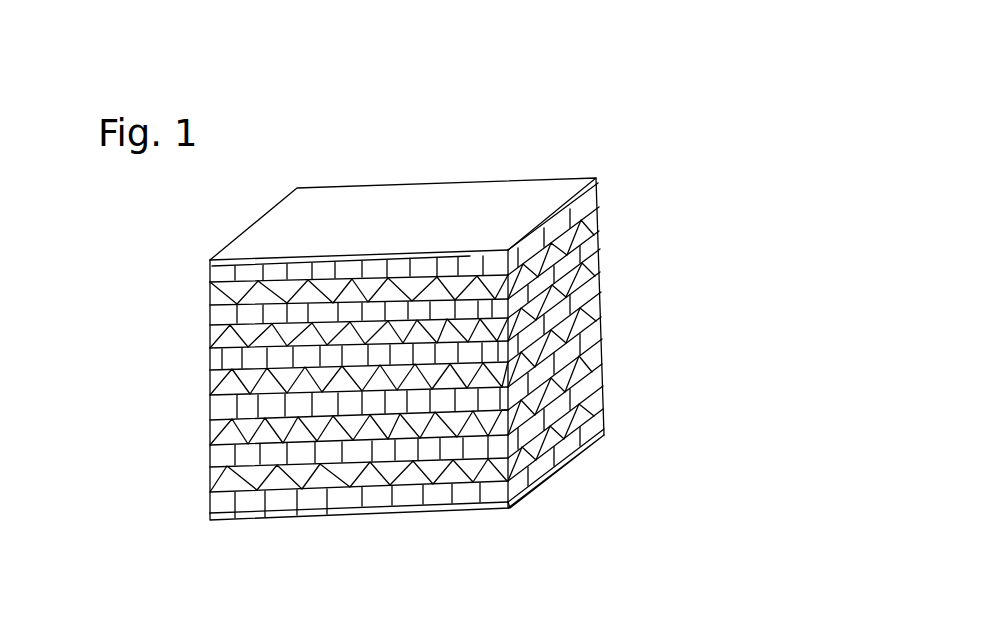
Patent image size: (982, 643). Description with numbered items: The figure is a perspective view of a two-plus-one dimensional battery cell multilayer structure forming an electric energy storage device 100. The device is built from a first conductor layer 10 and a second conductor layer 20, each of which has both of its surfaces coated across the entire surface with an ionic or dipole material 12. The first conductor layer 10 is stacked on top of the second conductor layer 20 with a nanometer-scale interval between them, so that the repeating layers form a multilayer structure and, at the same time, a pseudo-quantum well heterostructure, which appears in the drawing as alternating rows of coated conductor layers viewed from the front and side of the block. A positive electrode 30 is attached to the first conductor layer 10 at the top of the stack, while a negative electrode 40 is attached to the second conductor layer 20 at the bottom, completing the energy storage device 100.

The electric energy storage device 100 is at (693, 70).
The first conductor layer 10 is at (207, 281).
The ionic or dipole material 12 is at (207, 340).
The second conductor layer 20 is at (207, 317).
The positive electrode 30 is at (597, 182).
The negative electrode 40 is at (576, 457).